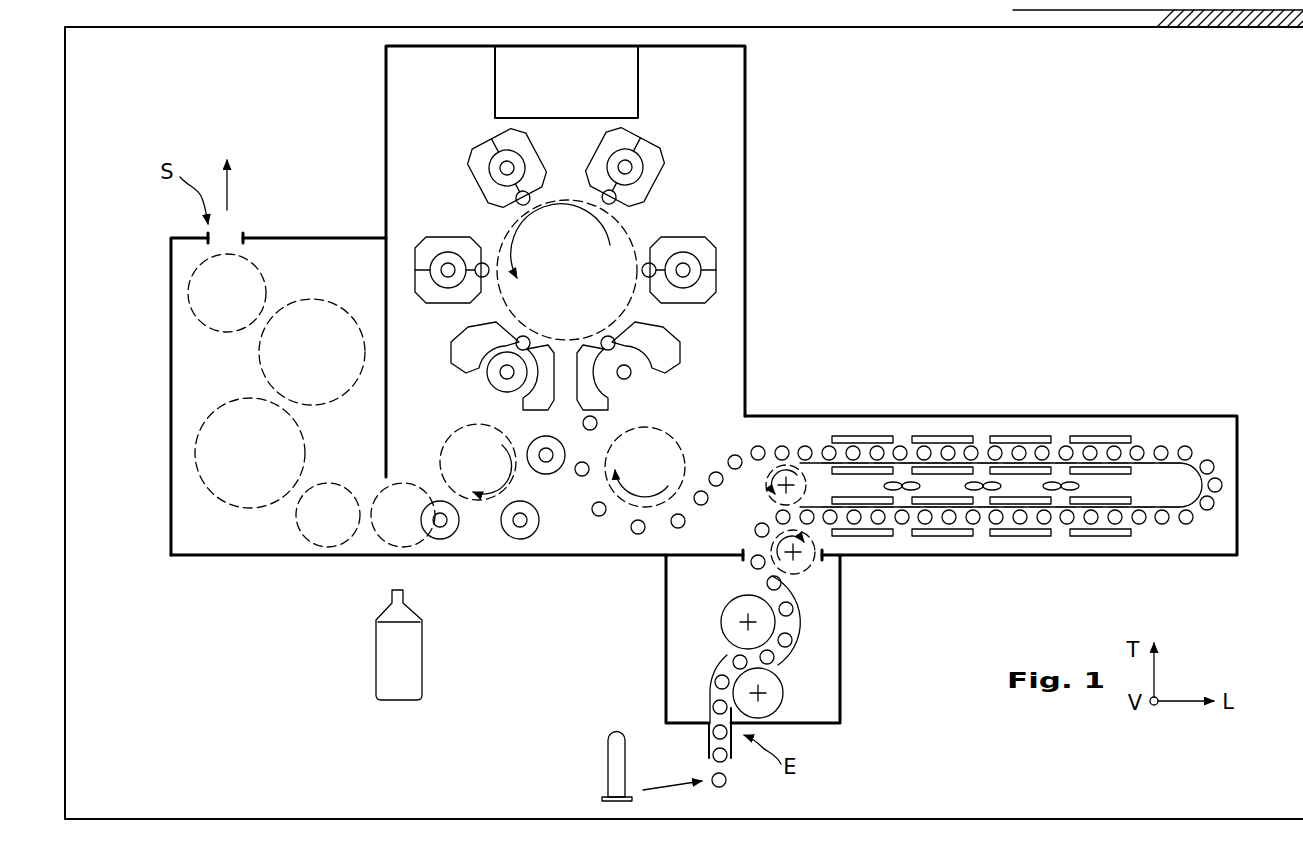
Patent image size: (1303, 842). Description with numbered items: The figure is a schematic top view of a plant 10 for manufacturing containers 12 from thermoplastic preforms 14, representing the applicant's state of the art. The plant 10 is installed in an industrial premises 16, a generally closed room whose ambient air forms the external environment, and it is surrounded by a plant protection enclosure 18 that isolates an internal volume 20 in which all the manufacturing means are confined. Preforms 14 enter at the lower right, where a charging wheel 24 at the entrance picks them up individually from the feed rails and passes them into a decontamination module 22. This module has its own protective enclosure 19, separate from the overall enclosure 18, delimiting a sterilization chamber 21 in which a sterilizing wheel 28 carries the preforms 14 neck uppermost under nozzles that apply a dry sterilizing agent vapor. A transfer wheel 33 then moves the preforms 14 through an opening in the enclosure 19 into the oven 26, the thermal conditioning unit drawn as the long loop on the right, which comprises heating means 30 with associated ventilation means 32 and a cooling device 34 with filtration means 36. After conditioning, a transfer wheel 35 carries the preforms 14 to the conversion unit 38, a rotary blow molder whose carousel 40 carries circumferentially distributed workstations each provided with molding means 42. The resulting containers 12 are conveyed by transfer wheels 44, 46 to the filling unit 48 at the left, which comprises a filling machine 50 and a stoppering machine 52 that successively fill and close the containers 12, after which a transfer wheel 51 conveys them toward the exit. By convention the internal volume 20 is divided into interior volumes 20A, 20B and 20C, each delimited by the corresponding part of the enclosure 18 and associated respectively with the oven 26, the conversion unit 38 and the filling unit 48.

The plant 10 is at (950, 268).
The container 12 is at (398, 663).
The preform 14 is at (629, 377).
The industrial premises 16 is at (1209, 34).
The plant protection enclosure 18 is at (1183, 415).
The protective enclosure 19 is at (842, 620).
The internal volume 20 is at (566, 537).
The interior volume 20A is at (1106, 476).
The interior volume 20B is at (489, 232).
The interior volume 20C is at (190, 489).
The sterilization chamber 21 is at (725, 598).
The decontamination module 22 is at (690, 638).
The charging wheel 24 is at (770, 688).
The oven 26 is at (981, 431).
The sterilizing wheel 28 is at (728, 612).
The heating means 30 is at (948, 440).
The ventilation means 32 is at (902, 481).
The transfer wheel 33 is at (806, 566).
The cooling device 34 is at (977, 538).
The transfer wheel 35 is at (652, 458).
The filtration means 36 is at (862, 412).
The conversion unit 38 is at (683, 218).
The carousel 40 is at (612, 298).
The molding means 42 is at (434, 239).
The transfer wheel 44 is at (470, 475).
The transfer wheel 46 is at (380, 523).
The filling unit 48 is at (192, 540).
The filling machine 50 is at (220, 467).
The transfer wheel 51 is at (206, 300).
The stoppering machine 52 is at (290, 360).